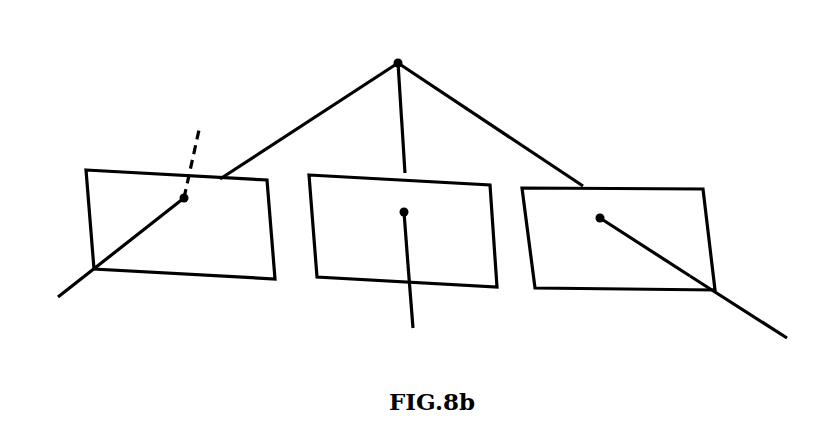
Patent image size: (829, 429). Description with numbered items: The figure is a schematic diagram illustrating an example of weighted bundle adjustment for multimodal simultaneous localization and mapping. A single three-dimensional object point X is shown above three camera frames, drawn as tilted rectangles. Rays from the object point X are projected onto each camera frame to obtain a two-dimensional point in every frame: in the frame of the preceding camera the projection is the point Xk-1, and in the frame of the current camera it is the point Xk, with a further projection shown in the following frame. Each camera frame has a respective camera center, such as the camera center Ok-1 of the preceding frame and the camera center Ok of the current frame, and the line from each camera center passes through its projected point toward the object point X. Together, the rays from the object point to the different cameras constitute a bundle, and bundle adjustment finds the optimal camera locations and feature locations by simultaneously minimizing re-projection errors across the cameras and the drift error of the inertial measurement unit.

The object point X is at (401, 103).
The projected 2D point in frame k−1 Xk-1 is at (199, 187).
The projected 2D point in frame k Xk is at (427, 237).
The camera center Ok-1 is at (107, 267).
The camera center Ok is at (412, 317).